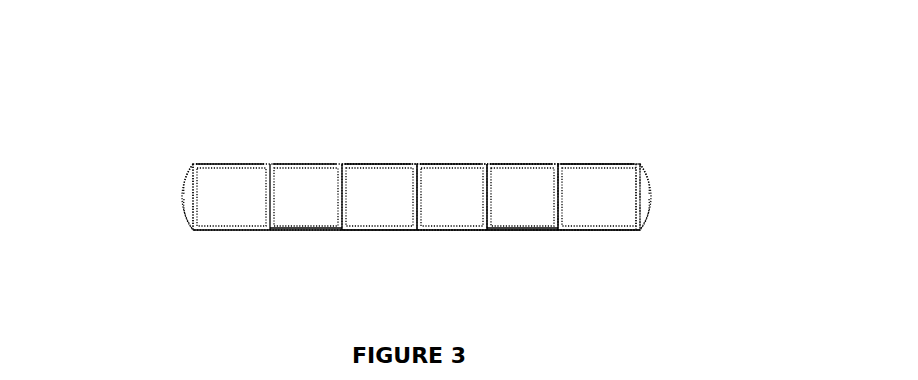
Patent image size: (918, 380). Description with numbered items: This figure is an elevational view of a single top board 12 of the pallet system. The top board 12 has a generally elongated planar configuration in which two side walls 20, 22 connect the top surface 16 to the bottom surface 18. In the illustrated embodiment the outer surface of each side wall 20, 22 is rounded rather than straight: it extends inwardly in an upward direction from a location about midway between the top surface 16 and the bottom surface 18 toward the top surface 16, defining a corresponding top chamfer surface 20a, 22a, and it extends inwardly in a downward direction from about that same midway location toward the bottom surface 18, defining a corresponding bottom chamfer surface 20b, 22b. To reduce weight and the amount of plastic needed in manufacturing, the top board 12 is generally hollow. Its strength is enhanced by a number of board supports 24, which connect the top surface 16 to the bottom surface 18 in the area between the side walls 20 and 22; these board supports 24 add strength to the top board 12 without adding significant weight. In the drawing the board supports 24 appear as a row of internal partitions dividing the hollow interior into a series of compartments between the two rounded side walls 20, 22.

The top board 12 is at (366, 137).
The top surface 16 is at (485, 166).
The bottom surface 18 is at (375, 228).
The side wall 20 is at (184, 194).
The top chamfer surface 20a is at (186, 170).
The bottom chamfer surface 20b is at (186, 217).
The side wall 22 is at (650, 192).
The top chamfer surface 22a is at (646, 170).
The bottom chamfer surface 22b is at (648, 213).
The board support 24 is at (559, 195).